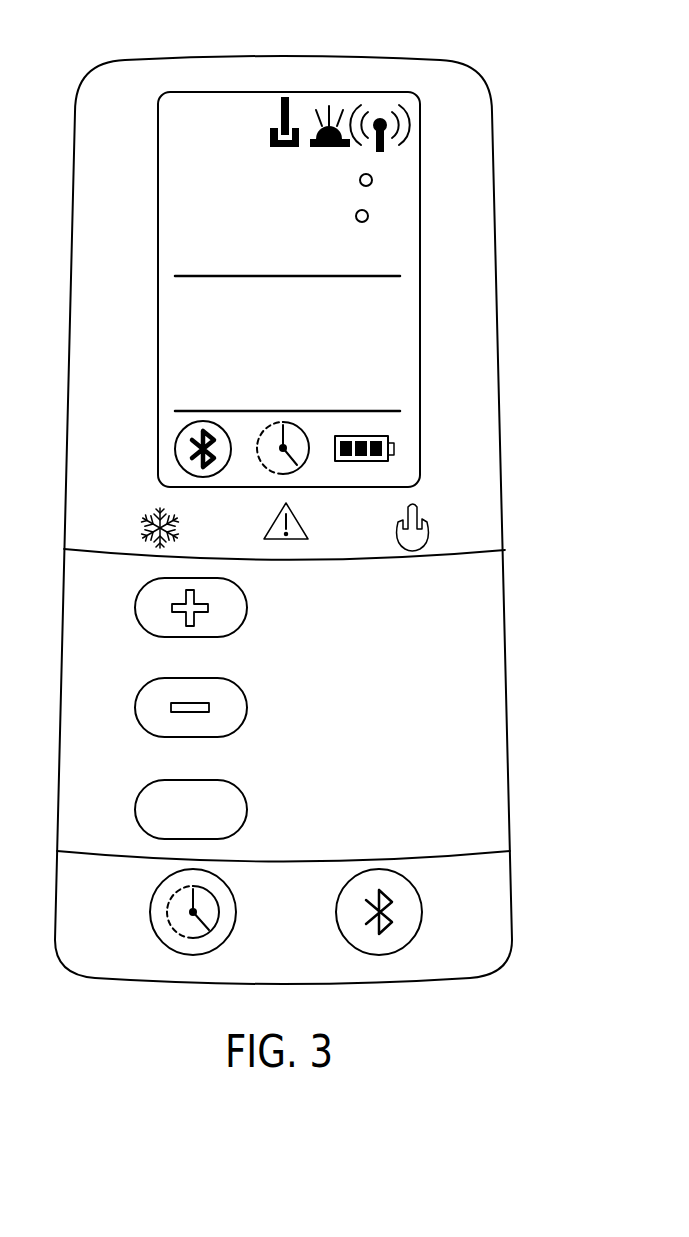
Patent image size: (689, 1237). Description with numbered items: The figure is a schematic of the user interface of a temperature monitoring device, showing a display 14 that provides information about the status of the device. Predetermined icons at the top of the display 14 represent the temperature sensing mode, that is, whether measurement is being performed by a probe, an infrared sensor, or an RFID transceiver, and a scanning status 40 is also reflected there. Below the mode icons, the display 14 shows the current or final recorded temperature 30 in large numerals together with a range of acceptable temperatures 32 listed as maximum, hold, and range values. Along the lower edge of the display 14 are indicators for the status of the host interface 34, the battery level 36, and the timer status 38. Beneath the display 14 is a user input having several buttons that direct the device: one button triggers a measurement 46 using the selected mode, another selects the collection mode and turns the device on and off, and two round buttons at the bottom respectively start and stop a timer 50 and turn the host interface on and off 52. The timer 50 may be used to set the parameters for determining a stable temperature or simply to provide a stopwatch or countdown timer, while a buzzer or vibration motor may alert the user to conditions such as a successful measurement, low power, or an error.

The display 14 is at (503, 406).
The current or final recorded temperature 30 is at (160, 187).
The range of acceptable temperatures 32 is at (410, 316).
The status of the host interface 34 is at (176, 440).
The battery level 36 is at (398, 447).
The timer status 38 is at (278, 473).
The scanning status 40 is at (272, 75).
The measurement trigger button 46 is at (492, 590).
The timer start/stop button 50 is at (238, 900).
The host interface on/off button 52 is at (425, 900).